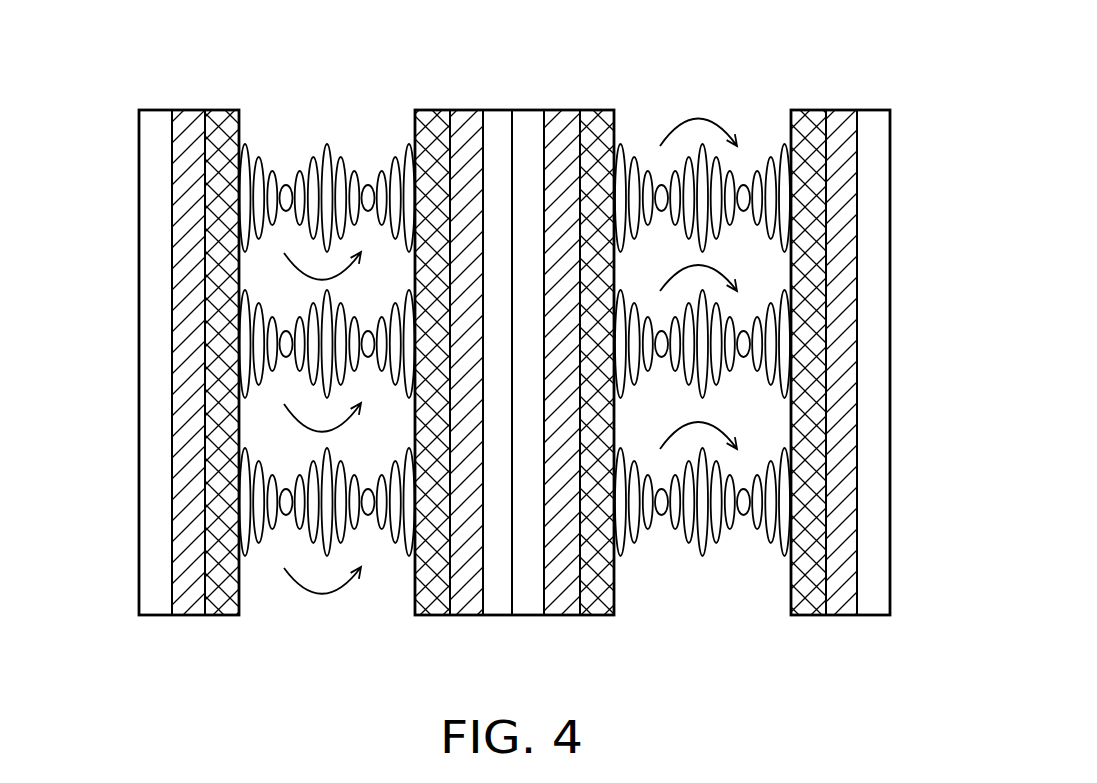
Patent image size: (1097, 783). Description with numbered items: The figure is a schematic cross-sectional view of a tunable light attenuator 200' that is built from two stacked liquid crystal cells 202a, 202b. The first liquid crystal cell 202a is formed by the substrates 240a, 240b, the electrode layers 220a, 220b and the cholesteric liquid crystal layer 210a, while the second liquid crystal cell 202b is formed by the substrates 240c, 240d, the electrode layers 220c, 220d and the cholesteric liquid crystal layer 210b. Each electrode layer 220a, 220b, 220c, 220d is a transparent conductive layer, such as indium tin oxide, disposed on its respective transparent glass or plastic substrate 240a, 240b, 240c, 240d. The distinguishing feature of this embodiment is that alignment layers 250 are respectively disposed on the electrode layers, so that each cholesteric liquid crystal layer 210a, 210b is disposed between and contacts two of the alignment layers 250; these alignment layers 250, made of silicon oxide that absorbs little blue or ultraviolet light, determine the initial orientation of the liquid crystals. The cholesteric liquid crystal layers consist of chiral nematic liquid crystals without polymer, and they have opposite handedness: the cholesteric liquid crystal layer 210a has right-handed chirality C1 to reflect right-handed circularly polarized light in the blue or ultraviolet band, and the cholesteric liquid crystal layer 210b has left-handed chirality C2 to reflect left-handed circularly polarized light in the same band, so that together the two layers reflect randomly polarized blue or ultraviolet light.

The tunable light attenuator 200' is at (515, 347).
The liquid crystal cell 202a is at (316, 367).
The liquid crystal cell 202b is at (710, 283).
The cholesteric liquid crystal layer 210a is at (327, 147).
The cholesteric liquid crystal layer 210b is at (767, 152).
The electrode layer 220a is at (187, 125).
The electrode layer 220b is at (466, 125).
The electrode layer 220c is at (565, 122).
The electrode layer 220d is at (845, 125).
The substrate 240a is at (155, 602).
The substrate 240b is at (499, 600).
The substrate 240c is at (525, 600).
The substrate 240d is at (862, 397).
The alignment layer 250 is at (218, 116).
The right-handed chirality C1 is at (322, 594).
The left-handed chirality C2 is at (690, 118).